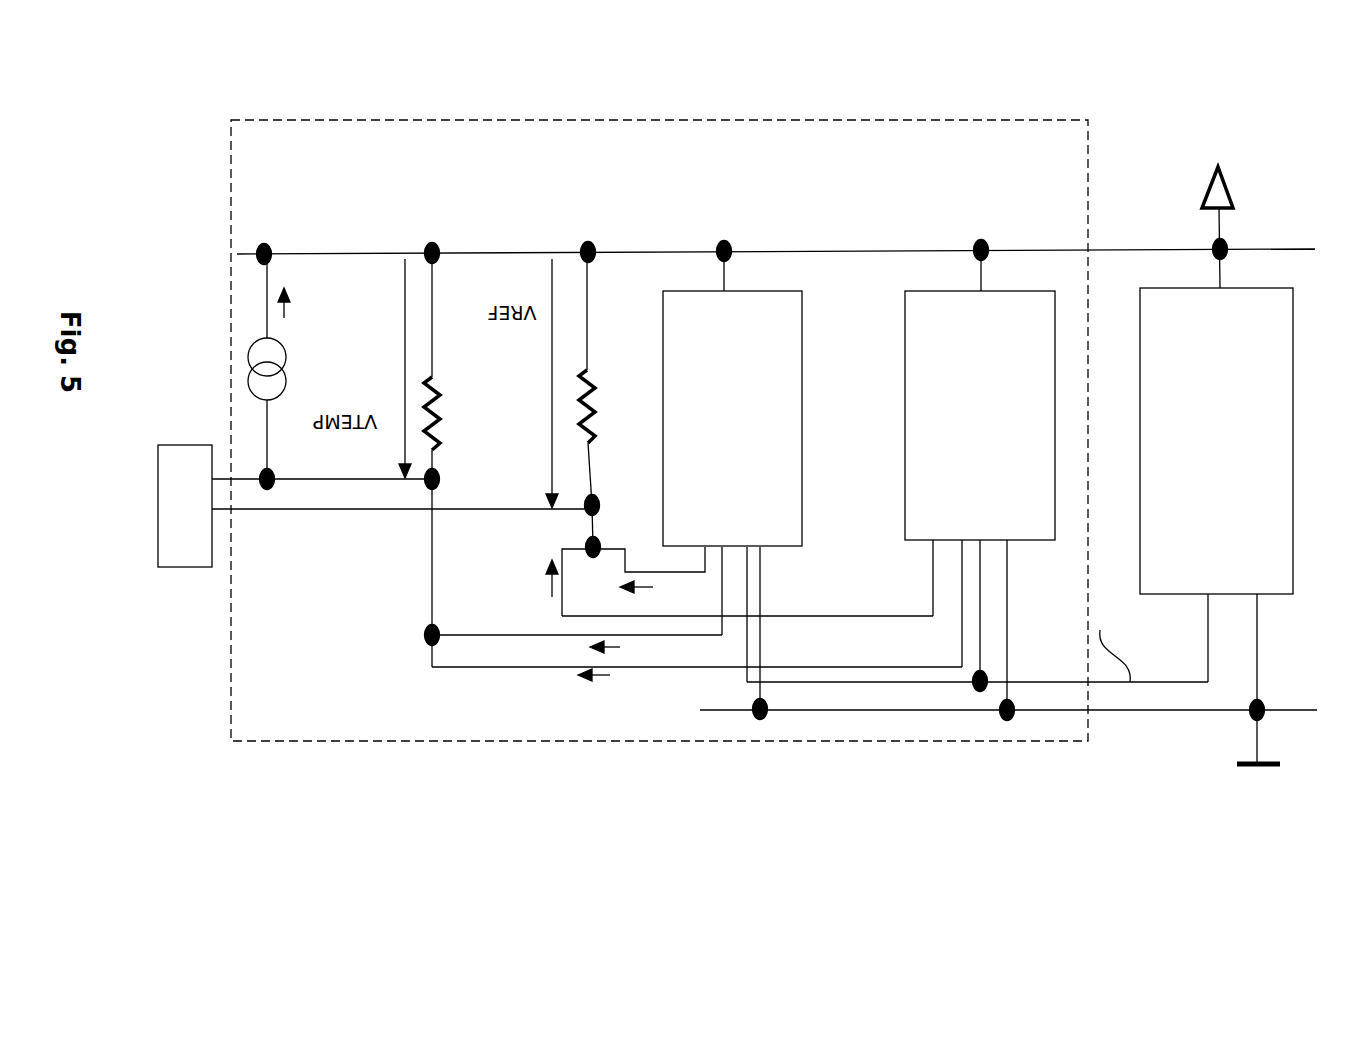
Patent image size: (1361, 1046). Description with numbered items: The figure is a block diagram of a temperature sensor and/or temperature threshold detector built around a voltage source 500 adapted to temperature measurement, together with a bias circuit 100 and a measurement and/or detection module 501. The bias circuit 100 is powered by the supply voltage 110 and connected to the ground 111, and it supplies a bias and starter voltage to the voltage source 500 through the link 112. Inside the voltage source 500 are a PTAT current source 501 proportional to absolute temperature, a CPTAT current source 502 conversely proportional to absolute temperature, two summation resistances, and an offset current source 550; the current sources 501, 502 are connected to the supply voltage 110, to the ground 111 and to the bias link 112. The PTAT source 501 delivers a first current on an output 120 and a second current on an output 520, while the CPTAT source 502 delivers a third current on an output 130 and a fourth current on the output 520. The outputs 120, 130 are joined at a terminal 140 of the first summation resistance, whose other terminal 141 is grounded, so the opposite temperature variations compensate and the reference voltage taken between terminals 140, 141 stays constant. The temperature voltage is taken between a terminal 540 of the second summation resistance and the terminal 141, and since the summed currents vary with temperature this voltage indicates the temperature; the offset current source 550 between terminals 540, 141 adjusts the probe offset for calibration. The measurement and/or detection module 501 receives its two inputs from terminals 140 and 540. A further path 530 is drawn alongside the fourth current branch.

The bias circuit 100 is at (1293, 500).
The voltage VCC 110 is at (1125, 712).
The ground 111 is at (1205, 250).
The link 112 is at (977, 616).
The output 120 is at (664, 566).
The output 130 is at (920, 612).
The terminal of the resistance R3 140 is at (598, 497).
The other terminal of the resistance R3 141 is at (603, 258).
The voltage source 500 is at (845, 745).
The PTAT current source 501 is at (802, 440).
The CPTAT current source 502 is at (905, 437).
The output 520 is at (533, 634).
The current path I7 530 is at (935, 665).
The terminal of the resistance R4 540 is at (443, 474).
The iOffset current source 550 is at (285, 383).